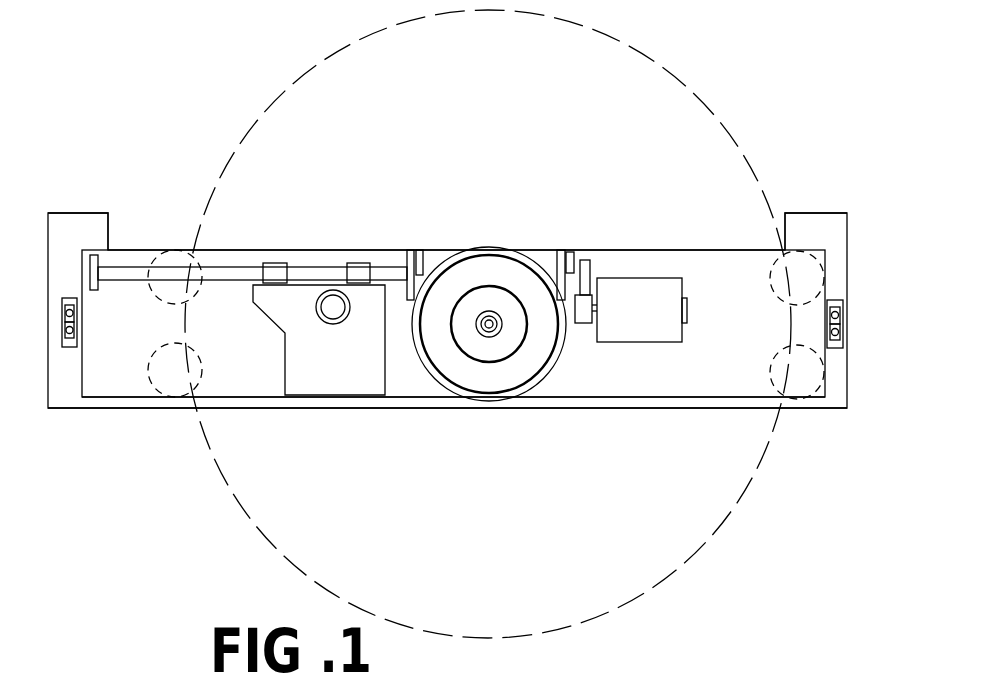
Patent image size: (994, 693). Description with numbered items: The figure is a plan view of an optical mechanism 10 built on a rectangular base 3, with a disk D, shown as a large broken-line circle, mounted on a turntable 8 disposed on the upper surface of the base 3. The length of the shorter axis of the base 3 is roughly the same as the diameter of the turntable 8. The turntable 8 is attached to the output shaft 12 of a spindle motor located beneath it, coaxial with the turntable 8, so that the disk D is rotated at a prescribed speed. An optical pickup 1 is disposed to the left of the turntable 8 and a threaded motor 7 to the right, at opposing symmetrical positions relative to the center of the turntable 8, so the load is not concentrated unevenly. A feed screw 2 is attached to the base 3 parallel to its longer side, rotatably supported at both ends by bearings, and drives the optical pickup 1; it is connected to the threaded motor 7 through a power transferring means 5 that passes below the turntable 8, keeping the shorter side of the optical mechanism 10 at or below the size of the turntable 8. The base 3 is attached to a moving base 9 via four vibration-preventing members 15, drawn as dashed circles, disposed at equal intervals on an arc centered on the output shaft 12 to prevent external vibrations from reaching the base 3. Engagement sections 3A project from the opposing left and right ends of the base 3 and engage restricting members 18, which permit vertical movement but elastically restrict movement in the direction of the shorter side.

The disk D is at (630, 60).
The optical mechanism 10 is at (338, 195).
The base 3 is at (602, 397).
The moving base 9 is at (505, 408).
The engagement sections 3A is at (62, 325).
The restricting members 18 is at (63, 298).
The vibration-preventing members 15 is at (150, 295).
The feed screw 2 is at (228, 267).
The optical pickup 1 is at (333, 382).
The power transferring means 5 is at (450, 242).
The turntable 8 is at (487, 262).
The output shaft 12 is at (482, 330).
The threaded motor 7 is at (645, 287).